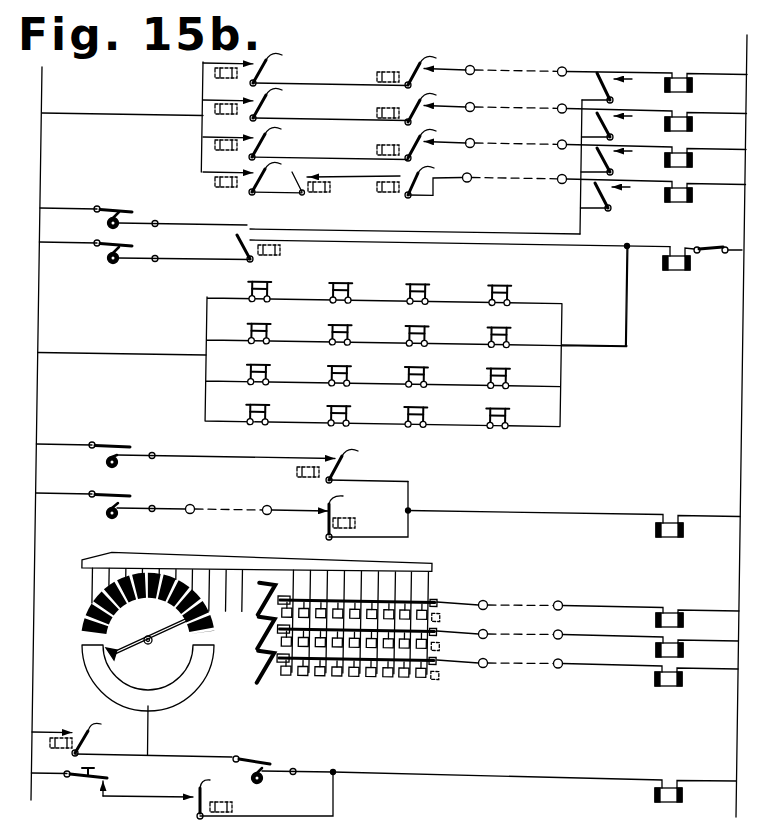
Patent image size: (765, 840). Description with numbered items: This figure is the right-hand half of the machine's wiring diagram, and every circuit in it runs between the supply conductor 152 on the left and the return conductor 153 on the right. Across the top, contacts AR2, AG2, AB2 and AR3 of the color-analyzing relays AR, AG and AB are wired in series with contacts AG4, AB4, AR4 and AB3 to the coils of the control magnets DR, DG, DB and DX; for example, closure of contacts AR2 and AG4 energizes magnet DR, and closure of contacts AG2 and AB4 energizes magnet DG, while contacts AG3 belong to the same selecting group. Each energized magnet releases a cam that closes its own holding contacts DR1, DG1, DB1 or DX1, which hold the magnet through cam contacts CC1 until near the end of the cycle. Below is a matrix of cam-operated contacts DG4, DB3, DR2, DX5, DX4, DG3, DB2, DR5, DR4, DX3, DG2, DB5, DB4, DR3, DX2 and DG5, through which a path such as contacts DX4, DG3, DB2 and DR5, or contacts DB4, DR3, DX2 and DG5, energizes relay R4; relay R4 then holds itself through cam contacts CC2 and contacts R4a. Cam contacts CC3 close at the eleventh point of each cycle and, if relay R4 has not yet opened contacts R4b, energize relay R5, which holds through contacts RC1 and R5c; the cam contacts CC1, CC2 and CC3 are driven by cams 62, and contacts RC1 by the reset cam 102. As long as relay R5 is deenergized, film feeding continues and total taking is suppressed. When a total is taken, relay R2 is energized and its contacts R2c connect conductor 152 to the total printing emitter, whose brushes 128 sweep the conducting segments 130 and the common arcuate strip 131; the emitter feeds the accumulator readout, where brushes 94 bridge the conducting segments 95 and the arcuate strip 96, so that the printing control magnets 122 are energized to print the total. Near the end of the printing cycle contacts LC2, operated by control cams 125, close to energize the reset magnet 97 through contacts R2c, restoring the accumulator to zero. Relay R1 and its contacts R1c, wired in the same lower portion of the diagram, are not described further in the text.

The conductor 152 is at (41, 157).
The conductor 153 is at (742, 379).
The cams 62 is at (106, 224).
The cam 102 is at (117, 465).
The printing control magnets 122 is at (683, 622).
The control cams 125 is at (262, 781).
The brushes 128 is at (114, 652).
The conducting segments 130 is at (93, 630).
The common arcuate conducting strip 131 is at (187, 682).
The brushes 94 is at (258, 598).
The conducting segments 95 is at (422, 608).
The arcuate conducting strip 96 is at (440, 600).
The reset magnet 97 is at (682, 798).
The relay AR is at (211, 72).
The relay AG is at (211, 108).
The relay AB is at (211, 145).
The contacts AR2 is at (329, 69).
The contacts AG2 is at (329, 104).
The contacts AB2 is at (328, 143).
The contacts AR3 is at (277, 178).
The contacts AG3 is at (309, 191).
The contacts AG4 is at (538, 65).
The contacts AB4 is at (538, 102).
The contacts AR4 is at (538, 138).
The contacts AB3 is at (538, 176).
The magnet DR is at (692, 88).
The magnet DG is at (692, 127).
The magnet DB is at (692, 163).
The magnet DX is at (692, 198).
The contacts DR1 is at (621, 88).
The contacts DG1 is at (622, 127).
The contacts DB1 is at (620, 162).
The contacts DX1 is at (619, 197).
The contacts DG4 is at (278, 282).
The contacts DB3 is at (362, 281).
The contacts DR2 is at (438, 279).
The contacts DX5 is at (512, 278).
The contacts DX4 is at (273, 322).
The contacts DG3 is at (355, 321).
The contacts DB2 is at (435, 319).
The contacts DR5 is at (508, 318).
The contacts DR4 is at (273, 360).
The contacts DX3 is at (355, 359).
The contacts DG2 is at (438, 357).
The contacts DB5 is at (508, 356).
The contacts DB4 is at (275, 402).
The contacts DR3 is at (355, 401).
The contacts DX2 is at (432, 399).
The contacts DG5 is at (508, 398).
The cam contacts CC1 is at (134, 211).
The cam contacts CC2 is at (134, 245).
The cam contacts CC3 is at (132, 493).
The contacts RC1 is at (132, 444).
The relay R4 is at (282, 251).
The contacts R4a is at (248, 208).
The contacts R4b is at (368, 511).
The relay R5 is at (296, 470).
The contacts R5c is at (367, 463).
The relay R2 is at (48, 740).
The contacts R2c is at (152, 732).
The relay R1 is at (233, 807).
The contacts R1c is at (265, 791).
The cam contacts LC2 is at (268, 762).